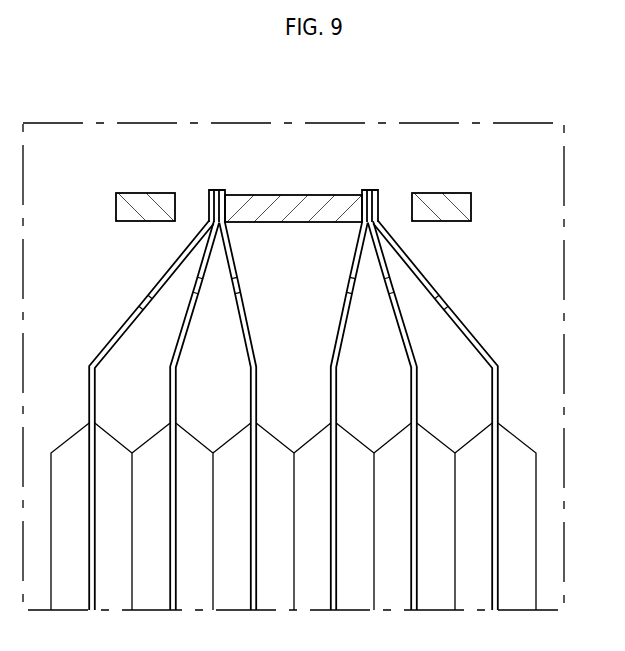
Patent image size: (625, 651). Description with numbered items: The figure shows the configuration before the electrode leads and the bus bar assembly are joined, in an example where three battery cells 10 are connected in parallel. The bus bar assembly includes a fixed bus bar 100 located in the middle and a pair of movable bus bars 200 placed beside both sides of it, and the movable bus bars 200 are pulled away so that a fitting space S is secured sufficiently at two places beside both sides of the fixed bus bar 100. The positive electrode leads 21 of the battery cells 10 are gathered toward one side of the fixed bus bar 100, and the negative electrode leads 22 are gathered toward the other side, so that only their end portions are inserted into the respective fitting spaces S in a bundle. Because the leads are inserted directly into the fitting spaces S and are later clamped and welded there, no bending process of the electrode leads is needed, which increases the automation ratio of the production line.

The battery cell 10 is at (518, 539).
The fixed bus bar 100 is at (293, 193).
The movable bus bar 200 is at (144, 193).
The fitting space S is at (200, 207).
The positive electrode lead 21 is at (213, 190).
The negative electrode lead 22 is at (368, 190).